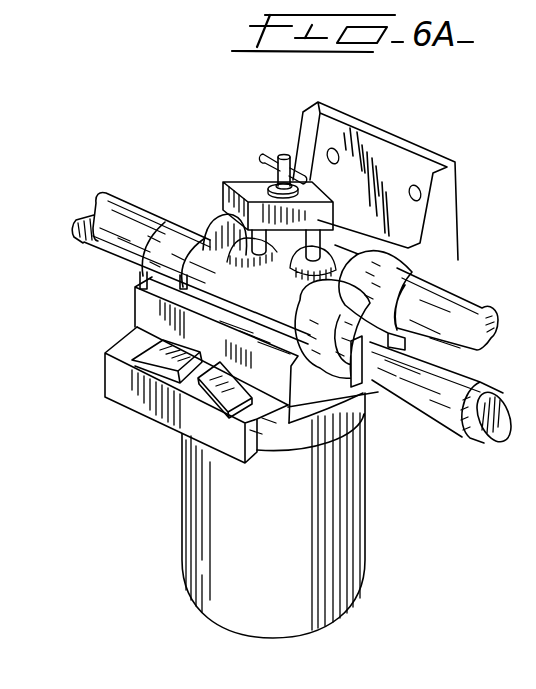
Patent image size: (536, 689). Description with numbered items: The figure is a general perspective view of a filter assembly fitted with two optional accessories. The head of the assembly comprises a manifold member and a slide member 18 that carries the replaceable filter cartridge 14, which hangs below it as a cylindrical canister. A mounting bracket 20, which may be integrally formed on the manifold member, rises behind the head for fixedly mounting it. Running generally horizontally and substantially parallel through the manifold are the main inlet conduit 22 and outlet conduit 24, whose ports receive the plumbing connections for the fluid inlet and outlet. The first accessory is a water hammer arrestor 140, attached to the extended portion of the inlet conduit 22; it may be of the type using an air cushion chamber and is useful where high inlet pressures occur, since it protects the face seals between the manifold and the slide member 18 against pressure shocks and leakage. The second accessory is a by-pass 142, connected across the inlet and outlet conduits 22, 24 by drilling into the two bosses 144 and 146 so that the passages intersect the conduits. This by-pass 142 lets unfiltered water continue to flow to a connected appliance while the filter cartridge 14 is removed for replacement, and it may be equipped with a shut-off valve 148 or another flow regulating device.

The filter cartridge 14 is at (180, 530).
The slide member 18 is at (100, 367).
The mounting bracket 20 is at (459, 194).
The inlet conduit 22 is at (203, 273).
The outlet conduit 24 is at (466, 300).
The water hammer arrestor 140 is at (408, 398).
The by-pass 142 is at (252, 183).
The boss 144 is at (242, 253).
The boss 146 is at (387, 247).
The shut-off valve 148 is at (287, 155).